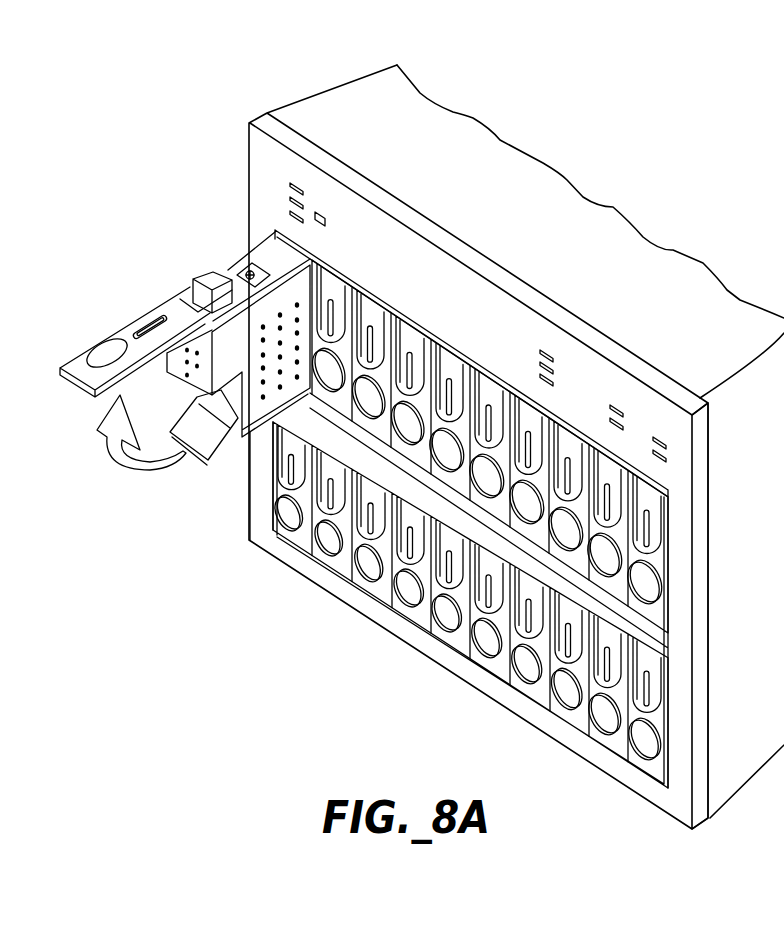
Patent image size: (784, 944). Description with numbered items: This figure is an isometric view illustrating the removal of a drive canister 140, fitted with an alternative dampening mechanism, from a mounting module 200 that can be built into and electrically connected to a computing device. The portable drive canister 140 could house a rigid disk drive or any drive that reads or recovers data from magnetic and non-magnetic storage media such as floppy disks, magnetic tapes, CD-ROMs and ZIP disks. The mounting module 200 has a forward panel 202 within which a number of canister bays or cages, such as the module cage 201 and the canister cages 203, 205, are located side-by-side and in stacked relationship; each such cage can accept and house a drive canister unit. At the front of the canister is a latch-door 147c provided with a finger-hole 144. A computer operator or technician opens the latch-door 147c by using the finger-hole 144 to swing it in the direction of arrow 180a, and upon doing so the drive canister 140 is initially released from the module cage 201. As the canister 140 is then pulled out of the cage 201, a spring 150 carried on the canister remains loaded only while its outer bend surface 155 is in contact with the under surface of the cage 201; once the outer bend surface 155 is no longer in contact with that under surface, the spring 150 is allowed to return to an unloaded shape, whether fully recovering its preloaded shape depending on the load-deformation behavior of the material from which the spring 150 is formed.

The mounting module 200 is at (516, 119).
The module cage 201 is at (272, 250).
The forward panel 202 is at (706, 463).
The canister cage 203 is at (327, 276).
The canister cage 205 is at (338, 448).
The drive canister 140 is at (227, 468).
The finger-hole 144 is at (102, 349).
The latch-door 147c is at (121, 337).
The spring 150 is at (210, 264).
The outer bend surface 155 is at (186, 273).
The arrow 180a is at (145, 482).